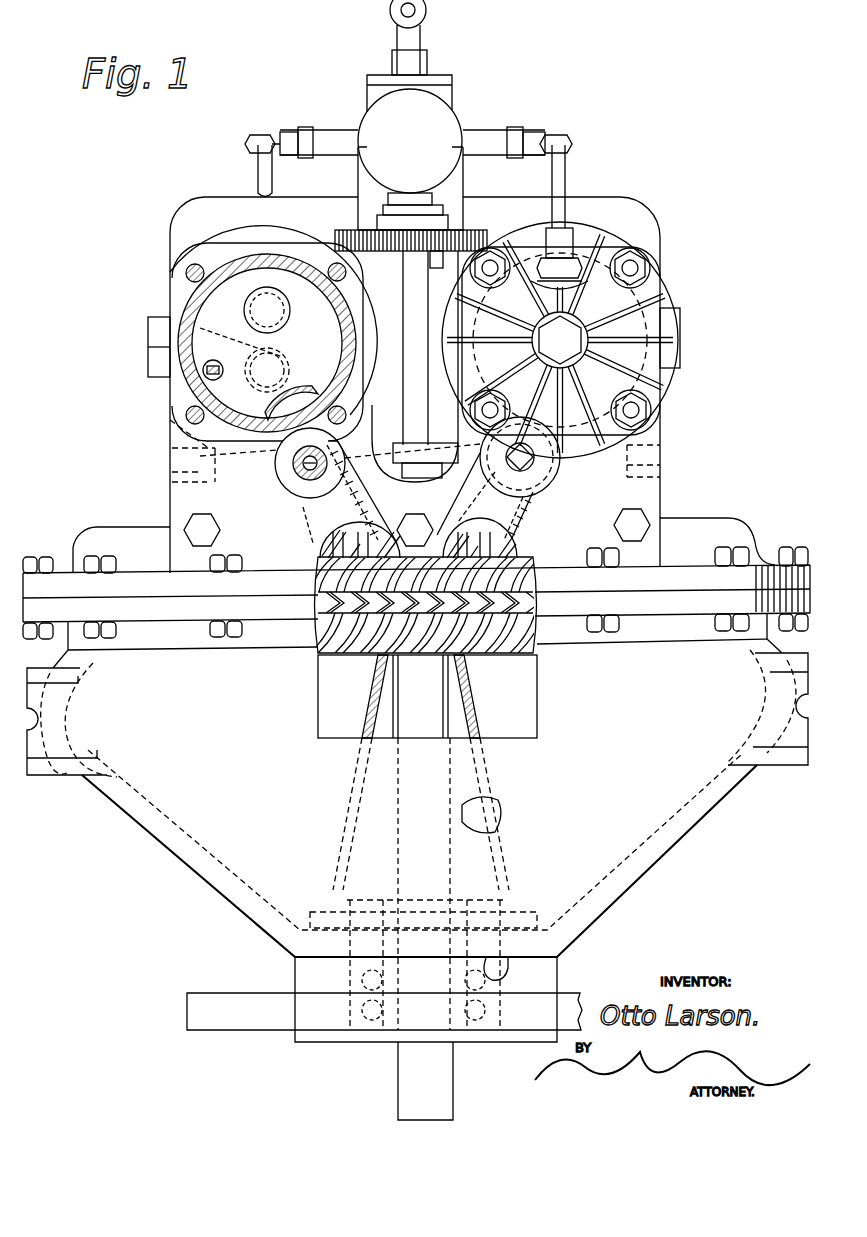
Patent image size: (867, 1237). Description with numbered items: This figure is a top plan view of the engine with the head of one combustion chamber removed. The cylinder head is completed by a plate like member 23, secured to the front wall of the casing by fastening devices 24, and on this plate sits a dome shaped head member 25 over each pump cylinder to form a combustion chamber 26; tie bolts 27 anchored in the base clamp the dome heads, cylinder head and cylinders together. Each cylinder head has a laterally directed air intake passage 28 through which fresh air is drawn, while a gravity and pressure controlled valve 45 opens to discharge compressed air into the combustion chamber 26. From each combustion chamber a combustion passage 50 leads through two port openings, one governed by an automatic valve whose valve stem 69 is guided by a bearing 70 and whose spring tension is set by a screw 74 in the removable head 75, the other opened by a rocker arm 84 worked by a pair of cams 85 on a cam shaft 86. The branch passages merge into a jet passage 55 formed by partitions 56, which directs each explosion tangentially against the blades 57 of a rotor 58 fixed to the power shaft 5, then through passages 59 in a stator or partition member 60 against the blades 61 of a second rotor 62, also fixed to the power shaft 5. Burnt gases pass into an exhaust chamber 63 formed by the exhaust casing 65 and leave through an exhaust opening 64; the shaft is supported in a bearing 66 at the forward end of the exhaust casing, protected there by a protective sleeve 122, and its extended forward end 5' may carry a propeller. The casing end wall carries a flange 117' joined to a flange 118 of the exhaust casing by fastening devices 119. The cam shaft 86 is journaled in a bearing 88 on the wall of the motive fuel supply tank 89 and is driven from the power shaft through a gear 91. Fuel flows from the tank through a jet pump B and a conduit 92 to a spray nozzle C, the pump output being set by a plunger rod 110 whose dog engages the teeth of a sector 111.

The power shaft 5 is at (423, 842).
The extended forward end of the power shaft 5' is at (440, 1081).
The plate like member 23 is at (404, 385).
The fastening devices 24 is at (200, 530).
The dome shaped head member 25 is at (185, 302).
The combustion chamber 26 is at (485, 343).
The tie bolts 27 is at (191, 270).
The air intake passage 28 is at (211, 372).
The valve seat of tubular valve stem 45 is at (267, 310).
The combustion passage 50 is at (296, 397).
The jet passage 55 is at (370, 533).
The partitions 56 is at (336, 533).
The blades of the rotor 57 is at (535, 582).
The rotor 58 is at (505, 558).
The passages in stator 59 is at (345, 600).
The stator or partition member 60 is at (535, 604).
The blades of the second rotor 61 is at (340, 642).
The second rotor 62 is at (330, 657).
The exhaust chamber 63 is at (322, 733).
The exhaust opening 64 is at (498, 810).
The exhaust casing 65 is at (417, 798).
The bearing 66 is at (483, 977).
The valve stem 69 is at (300, 456).
The bearing 70 is at (300, 472).
The screw 74 is at (530, 463).
The removable head 75 is at (498, 478).
The rocker arm 84 is at (400, 445).
The cams 85 is at (428, 465).
The cam shaft 86 is at (408, 312).
The bearing 88 is at (443, 210).
The motive fuel supply tank 89 is at (410, 152).
The gear 91 is at (350, 233).
The conduit 92 is at (257, 172).
The plunger rod 110 is at (392, 12).
The sector 111 is at (421, 45).
The flange 117' is at (416, 584).
The flange 118 is at (416, 625).
The fastening devices 119 is at (103, 553).
The protective sleeve 122 is at (470, 720).
The fuel pump B is at (306, 128).
The spray nozzle C is at (561, 240).